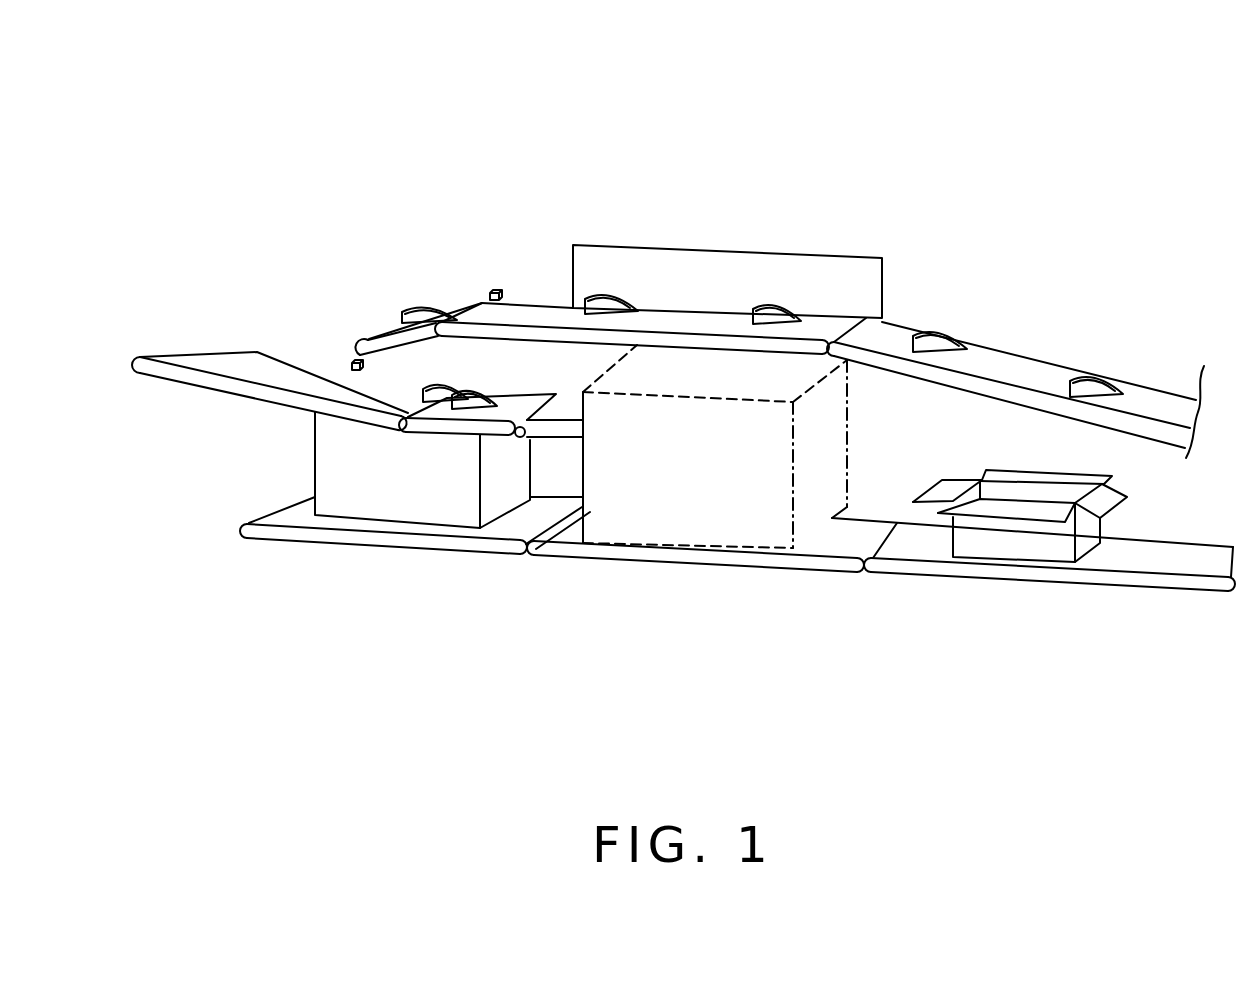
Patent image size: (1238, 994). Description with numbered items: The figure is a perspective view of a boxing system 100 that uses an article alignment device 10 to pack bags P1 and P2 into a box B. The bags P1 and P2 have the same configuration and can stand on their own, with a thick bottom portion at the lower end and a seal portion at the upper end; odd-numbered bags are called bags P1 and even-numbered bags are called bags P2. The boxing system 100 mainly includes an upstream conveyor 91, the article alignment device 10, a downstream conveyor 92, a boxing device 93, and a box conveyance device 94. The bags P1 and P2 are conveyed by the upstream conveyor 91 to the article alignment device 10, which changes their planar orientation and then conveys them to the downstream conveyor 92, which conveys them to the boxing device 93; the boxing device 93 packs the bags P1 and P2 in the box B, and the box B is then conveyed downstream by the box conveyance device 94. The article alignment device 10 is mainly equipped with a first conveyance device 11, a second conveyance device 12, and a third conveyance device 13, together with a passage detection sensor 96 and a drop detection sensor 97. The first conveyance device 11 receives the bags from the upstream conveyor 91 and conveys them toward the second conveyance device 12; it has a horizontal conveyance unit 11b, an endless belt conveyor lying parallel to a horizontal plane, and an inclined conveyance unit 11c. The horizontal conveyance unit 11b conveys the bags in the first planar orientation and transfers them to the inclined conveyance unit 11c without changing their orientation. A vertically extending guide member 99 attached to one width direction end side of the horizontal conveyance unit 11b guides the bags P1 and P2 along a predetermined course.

The boxing system 100 is at (1020, 117).
The article alignment device 10 is at (282, 214).
The first conveyance device 11 is at (501, 221).
The horizontal conveyance unit 11b is at (482, 302).
The inclined conveyance unit 11c is at (371, 338).
The second conveyance device 12 is at (248, 352).
The third conveyance device 13 is at (420, 414).
The passage detection sensor 96 is at (497, 289).
The drop detection sensor 97 is at (364, 367).
The guide member 99 is at (758, 245).
The upstream conveyor 91 is at (1035, 282).
The downstream conveyor 92 is at (545, 443).
The boxing device 93 is at (655, 544).
The box conveyance device 94 is at (1012, 604).
The box B is at (1127, 497).
The bag P1 is at (763, 308).
The bag P2 is at (617, 284).